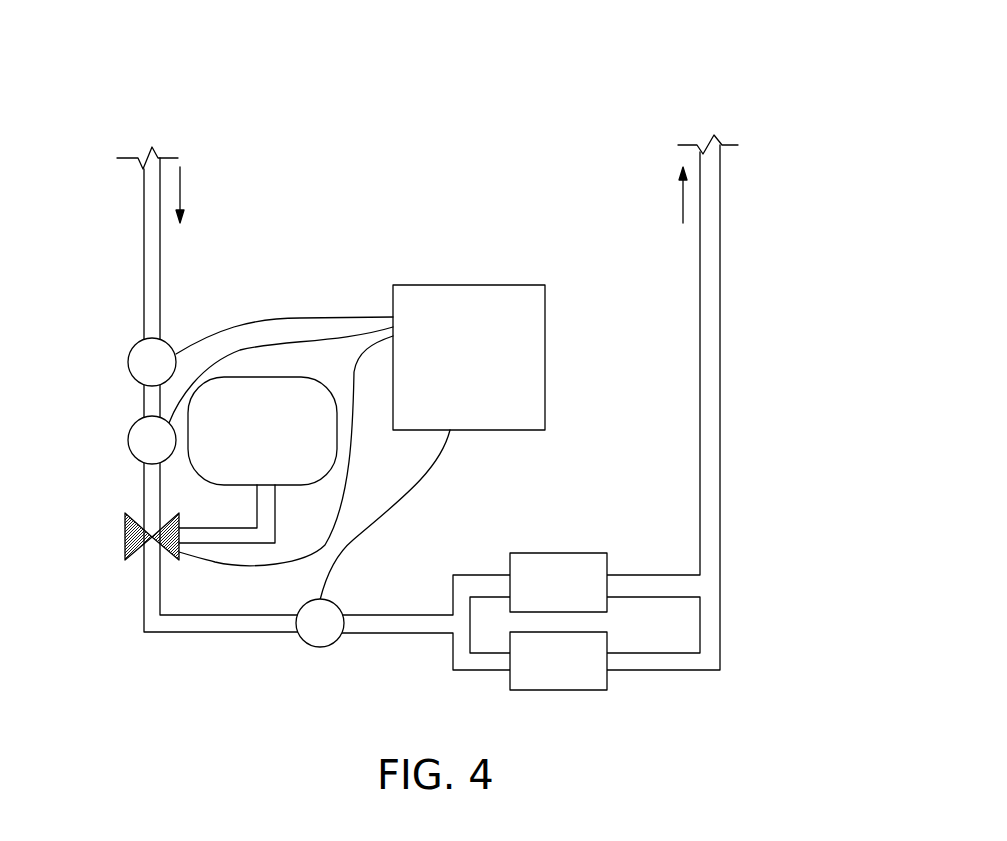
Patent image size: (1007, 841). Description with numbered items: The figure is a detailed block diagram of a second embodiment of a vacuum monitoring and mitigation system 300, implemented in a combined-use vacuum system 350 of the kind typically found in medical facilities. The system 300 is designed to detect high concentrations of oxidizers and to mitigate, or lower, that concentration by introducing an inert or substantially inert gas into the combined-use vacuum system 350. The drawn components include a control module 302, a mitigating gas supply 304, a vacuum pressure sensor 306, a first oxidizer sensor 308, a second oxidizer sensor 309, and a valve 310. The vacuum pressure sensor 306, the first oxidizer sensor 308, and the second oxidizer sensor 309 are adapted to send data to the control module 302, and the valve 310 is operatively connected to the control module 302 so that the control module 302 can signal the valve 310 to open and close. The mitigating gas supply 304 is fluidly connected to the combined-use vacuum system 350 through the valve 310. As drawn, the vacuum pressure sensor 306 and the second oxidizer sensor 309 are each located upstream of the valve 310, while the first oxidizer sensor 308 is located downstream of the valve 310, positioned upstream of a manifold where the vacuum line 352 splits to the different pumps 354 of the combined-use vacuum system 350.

The vacuum monitoring and mitigation system 300 is at (582, 80).
The control module 302 is at (487, 285).
The mitigating gas supply 304 is at (275, 378).
The vacuum pressure sensor 306 is at (131, 352).
The first oxidizer sensor 308 is at (318, 647).
The second oxidizer sensor 309 is at (131, 437).
The valve 310 is at (125, 535).
The combined-use vacuum system 350 is at (123, 130).
The vacuum line 352 is at (172, 633).
The pumps 354 is at (563, 553).